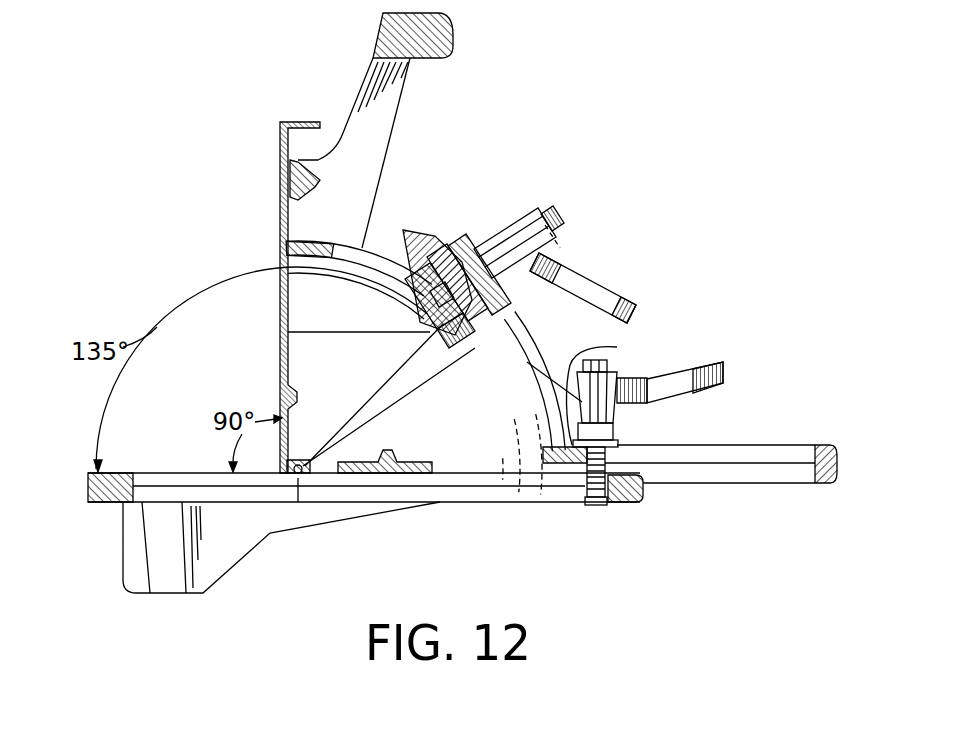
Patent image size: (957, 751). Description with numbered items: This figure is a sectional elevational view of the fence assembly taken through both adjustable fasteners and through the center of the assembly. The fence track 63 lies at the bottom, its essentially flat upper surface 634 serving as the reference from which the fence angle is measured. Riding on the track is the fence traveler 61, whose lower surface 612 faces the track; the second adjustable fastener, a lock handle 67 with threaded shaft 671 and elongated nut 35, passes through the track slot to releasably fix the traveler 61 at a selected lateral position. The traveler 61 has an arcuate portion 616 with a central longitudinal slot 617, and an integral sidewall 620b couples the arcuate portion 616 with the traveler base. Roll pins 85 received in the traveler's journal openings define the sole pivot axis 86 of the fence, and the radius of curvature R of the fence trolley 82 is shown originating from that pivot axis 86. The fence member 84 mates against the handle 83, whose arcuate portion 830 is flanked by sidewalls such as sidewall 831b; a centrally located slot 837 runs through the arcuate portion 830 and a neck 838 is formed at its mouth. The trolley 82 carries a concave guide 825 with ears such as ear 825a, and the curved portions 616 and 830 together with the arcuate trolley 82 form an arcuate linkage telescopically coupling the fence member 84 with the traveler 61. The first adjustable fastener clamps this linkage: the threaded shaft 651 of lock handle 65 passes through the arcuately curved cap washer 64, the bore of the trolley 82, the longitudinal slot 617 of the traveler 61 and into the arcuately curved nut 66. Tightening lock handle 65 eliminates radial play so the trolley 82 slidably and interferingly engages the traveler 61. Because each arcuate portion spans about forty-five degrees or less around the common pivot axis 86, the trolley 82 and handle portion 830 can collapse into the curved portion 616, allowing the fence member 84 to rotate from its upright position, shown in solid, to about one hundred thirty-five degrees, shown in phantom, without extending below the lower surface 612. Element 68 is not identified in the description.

The handle 83 is at (452, 32).
The fence member 84 is at (283, 122).
The arcuate portion 830 is at (290, 245).
The slot 837 is at (350, 252).
The arcuately curved nut 66 is at (375, 252).
The fence trolley 82 is at (415, 235).
The arcuately curved cap washer 64 is at (463, 240).
The threaded shaft 651 is at (514, 297).
The neck 838 is at (432, 326).
The lock handle 65 is at (602, 282).
The longitudinal slot 617 is at (522, 345).
The arcuate portion 616 is at (612, 392).
The lock handle 67 is at (692, 368).
The upper plate 68 is at (620, 447).
The fence traveler 61 is at (832, 452).
The threaded shaft 671 is at (594, 506).
The elongated nut 35 is at (630, 503).
The fence track 63 is at (437, 510).
The upper surface 634 is at (120, 473).
The lower surface 612 is at (382, 475).
The roll pins 85 is at (299, 463).
The pivot axis 86 is at (298, 478).
The radius of curvature R is at (389, 395).
The ear 825a is at (387, 305).
The sidewall 831b is at (295, 324).
The sidewall 620b is at (383, 440).
The concave guide 825 is at (508, 388).